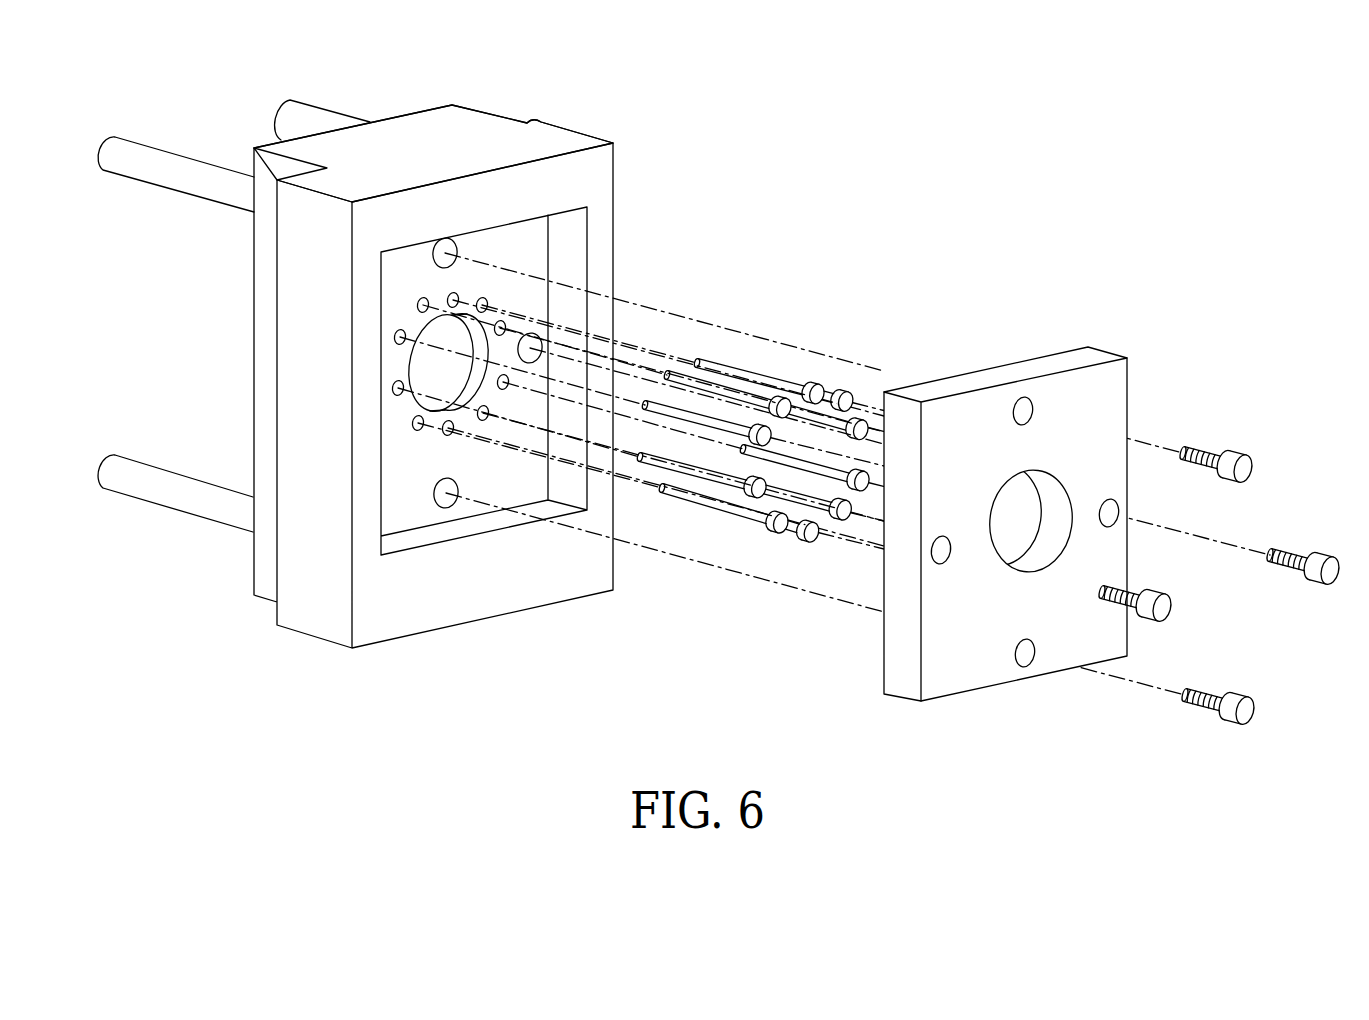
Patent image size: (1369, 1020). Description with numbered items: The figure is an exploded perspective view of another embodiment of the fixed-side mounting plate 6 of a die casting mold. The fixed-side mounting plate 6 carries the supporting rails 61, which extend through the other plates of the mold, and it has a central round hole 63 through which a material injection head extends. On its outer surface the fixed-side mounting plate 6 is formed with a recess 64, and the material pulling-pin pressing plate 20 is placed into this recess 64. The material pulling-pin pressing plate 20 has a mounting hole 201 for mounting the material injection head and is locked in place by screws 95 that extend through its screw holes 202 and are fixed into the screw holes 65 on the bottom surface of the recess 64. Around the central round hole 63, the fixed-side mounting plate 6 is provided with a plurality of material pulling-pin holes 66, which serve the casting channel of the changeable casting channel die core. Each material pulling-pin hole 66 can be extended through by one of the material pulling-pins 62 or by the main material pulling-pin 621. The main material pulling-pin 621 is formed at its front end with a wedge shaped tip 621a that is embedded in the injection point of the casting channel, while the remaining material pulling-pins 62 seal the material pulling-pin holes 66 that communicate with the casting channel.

The fixed-side mounting plate 6 is at (428, 373).
The supporting rails 61 is at (302, 113).
The material pulling-pins 62 is at (771, 475).
The main material pulling-pin 621 is at (793, 321).
The wedge shaped tip 621a is at (726, 305).
The central round hole 63 is at (477, 368).
The recess 64 is at (535, 247).
The screw holes 65 is at (450, 250).
The material pulling-pin holes 66 is at (392, 389).
The material pulling-pin pressing plate 20 is at (1083, 475).
The mounting hole 201 is at (1036, 528).
The screw holes 202 is at (1023, 411).
The screws 95 is at (1213, 450).